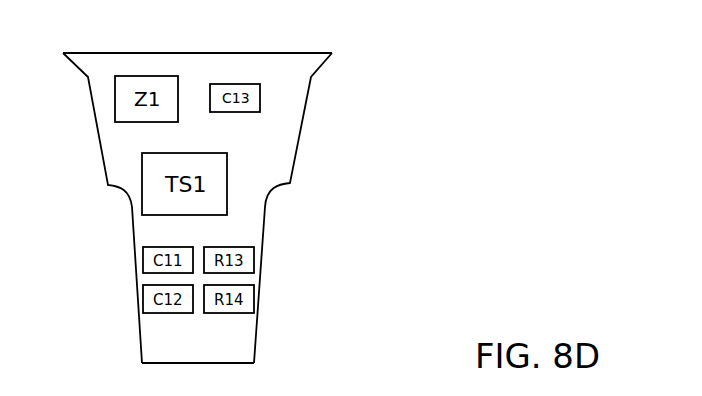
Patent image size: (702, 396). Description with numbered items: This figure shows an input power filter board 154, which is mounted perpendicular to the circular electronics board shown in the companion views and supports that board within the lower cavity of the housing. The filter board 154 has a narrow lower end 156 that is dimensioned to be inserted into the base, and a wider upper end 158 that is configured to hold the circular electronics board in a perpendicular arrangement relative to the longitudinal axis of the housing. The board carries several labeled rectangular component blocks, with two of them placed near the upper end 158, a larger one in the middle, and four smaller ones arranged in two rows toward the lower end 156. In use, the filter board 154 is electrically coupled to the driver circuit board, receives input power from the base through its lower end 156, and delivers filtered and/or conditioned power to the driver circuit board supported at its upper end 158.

The input power filter board 154 is at (301, 132).
The lower end 156 is at (141, 353).
The upper end 158 is at (288, 53).